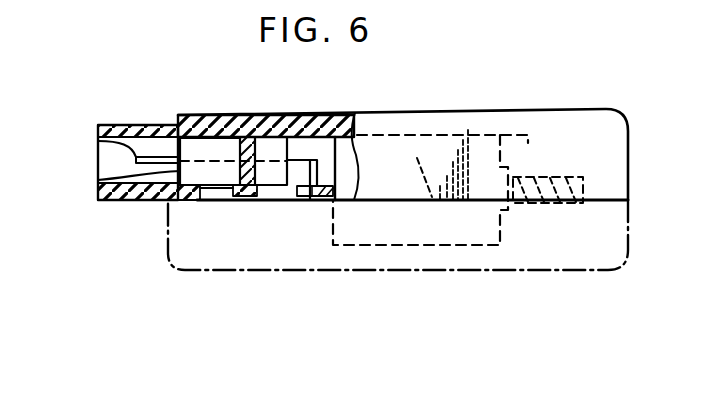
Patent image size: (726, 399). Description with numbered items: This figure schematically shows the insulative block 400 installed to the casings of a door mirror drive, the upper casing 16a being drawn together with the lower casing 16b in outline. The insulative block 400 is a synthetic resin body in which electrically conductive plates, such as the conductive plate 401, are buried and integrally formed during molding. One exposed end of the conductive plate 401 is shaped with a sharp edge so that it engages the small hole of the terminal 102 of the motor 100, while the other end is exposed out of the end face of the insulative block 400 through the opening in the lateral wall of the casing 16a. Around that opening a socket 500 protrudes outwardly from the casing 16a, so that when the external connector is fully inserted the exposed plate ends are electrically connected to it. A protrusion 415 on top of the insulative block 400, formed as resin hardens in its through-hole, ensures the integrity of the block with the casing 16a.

The casing 16a is at (433, 110).
The lower housing half 16b is at (578, 252).
The socket 500 is at (117, 125).
The conductive plate 401 is at (100, 146).
The insulative block 400 is at (100, 177).
The protrusion 415 is at (240, 202).
The terminal 102 is at (303, 198).
The motor 100 is at (462, 232).